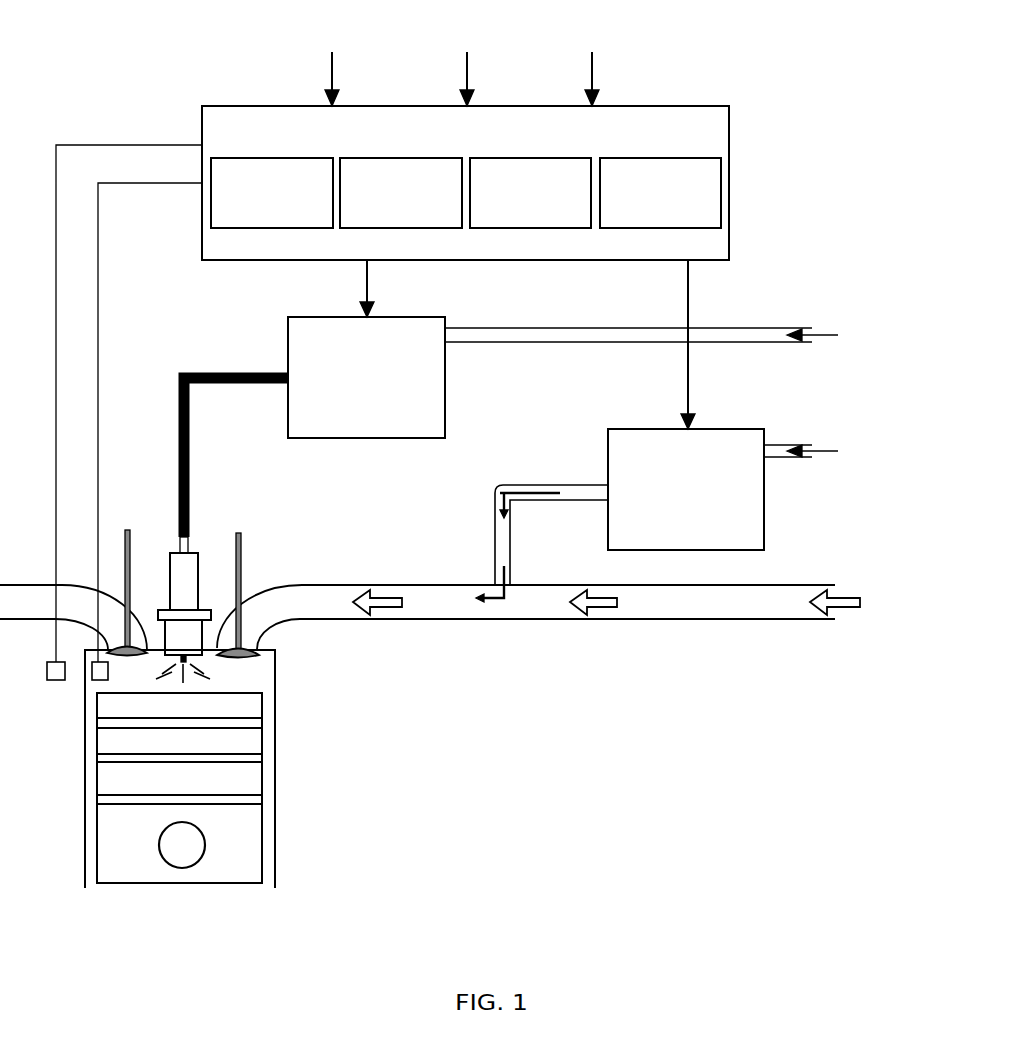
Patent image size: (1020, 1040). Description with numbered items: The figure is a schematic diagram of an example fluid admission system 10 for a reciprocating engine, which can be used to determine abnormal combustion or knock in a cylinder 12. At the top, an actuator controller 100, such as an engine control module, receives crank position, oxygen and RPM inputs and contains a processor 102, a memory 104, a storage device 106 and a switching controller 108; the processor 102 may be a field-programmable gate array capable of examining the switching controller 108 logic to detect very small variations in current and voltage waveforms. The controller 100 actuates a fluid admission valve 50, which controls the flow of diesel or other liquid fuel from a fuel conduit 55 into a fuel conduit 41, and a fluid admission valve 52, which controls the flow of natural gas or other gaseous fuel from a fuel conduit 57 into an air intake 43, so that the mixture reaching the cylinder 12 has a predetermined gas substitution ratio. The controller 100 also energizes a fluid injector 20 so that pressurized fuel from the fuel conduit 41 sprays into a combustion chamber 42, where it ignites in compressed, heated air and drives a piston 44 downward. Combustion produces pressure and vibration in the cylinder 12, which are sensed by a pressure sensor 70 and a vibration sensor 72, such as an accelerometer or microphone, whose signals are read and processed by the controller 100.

The fluid admission system 10 is at (104, 68).
The cylinder 12 is at (85, 830).
The fluid injector 20 is at (172, 553).
The fuel conduit 41 is at (190, 468).
The combustion chamber 42 is at (245, 673).
The air intake 43 is at (403, 585).
The piston 44 is at (262, 847).
The fluid admission valve 50 is at (445, 377).
The fluid admission valve 52 is at (764, 506).
The fuel conduit 55 is at (752, 332).
The fuel conduit 57 is at (766, 458).
The pressure sensor 70 is at (92, 681).
The vibration sensor 72 is at (52, 680).
The actuator controller 100 is at (722, 106).
The processor 102 is at (372, 158).
The memory 104 is at (556, 158).
The storage device 106 is at (661, 158).
The switching controller 108 is at (277, 158).